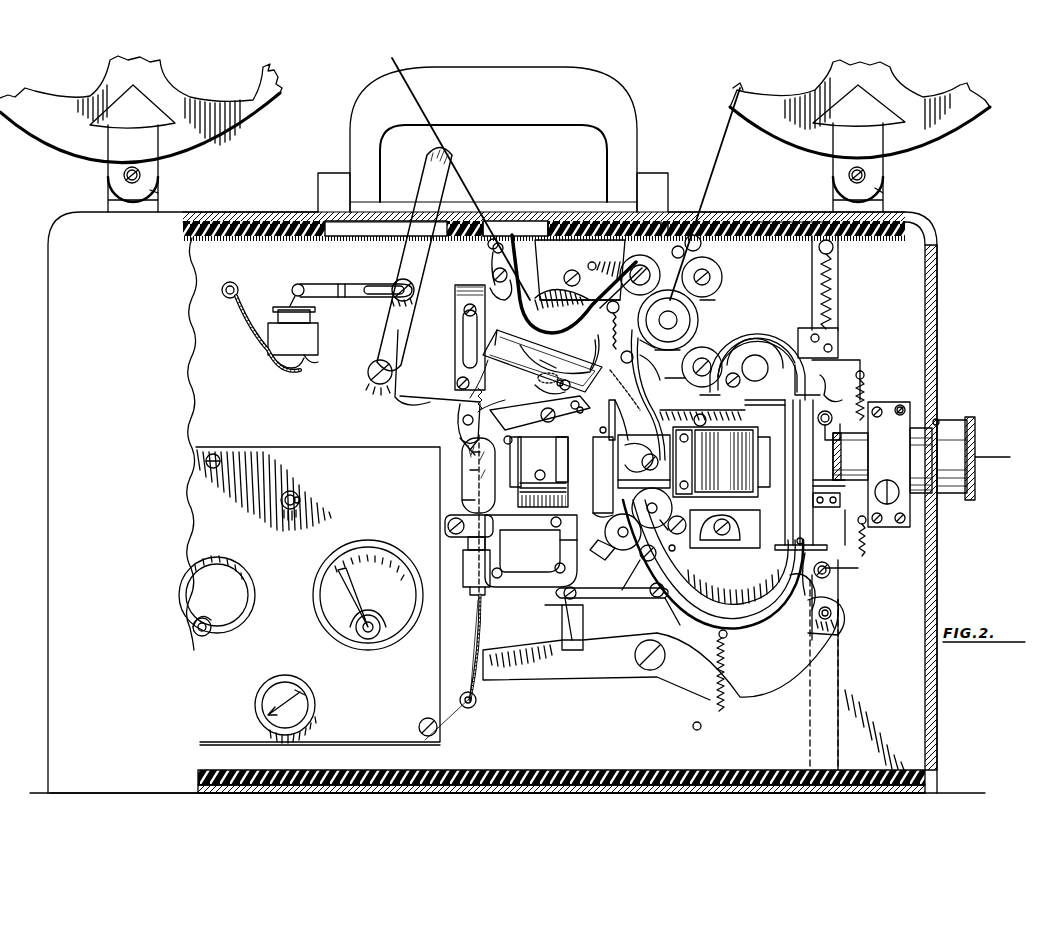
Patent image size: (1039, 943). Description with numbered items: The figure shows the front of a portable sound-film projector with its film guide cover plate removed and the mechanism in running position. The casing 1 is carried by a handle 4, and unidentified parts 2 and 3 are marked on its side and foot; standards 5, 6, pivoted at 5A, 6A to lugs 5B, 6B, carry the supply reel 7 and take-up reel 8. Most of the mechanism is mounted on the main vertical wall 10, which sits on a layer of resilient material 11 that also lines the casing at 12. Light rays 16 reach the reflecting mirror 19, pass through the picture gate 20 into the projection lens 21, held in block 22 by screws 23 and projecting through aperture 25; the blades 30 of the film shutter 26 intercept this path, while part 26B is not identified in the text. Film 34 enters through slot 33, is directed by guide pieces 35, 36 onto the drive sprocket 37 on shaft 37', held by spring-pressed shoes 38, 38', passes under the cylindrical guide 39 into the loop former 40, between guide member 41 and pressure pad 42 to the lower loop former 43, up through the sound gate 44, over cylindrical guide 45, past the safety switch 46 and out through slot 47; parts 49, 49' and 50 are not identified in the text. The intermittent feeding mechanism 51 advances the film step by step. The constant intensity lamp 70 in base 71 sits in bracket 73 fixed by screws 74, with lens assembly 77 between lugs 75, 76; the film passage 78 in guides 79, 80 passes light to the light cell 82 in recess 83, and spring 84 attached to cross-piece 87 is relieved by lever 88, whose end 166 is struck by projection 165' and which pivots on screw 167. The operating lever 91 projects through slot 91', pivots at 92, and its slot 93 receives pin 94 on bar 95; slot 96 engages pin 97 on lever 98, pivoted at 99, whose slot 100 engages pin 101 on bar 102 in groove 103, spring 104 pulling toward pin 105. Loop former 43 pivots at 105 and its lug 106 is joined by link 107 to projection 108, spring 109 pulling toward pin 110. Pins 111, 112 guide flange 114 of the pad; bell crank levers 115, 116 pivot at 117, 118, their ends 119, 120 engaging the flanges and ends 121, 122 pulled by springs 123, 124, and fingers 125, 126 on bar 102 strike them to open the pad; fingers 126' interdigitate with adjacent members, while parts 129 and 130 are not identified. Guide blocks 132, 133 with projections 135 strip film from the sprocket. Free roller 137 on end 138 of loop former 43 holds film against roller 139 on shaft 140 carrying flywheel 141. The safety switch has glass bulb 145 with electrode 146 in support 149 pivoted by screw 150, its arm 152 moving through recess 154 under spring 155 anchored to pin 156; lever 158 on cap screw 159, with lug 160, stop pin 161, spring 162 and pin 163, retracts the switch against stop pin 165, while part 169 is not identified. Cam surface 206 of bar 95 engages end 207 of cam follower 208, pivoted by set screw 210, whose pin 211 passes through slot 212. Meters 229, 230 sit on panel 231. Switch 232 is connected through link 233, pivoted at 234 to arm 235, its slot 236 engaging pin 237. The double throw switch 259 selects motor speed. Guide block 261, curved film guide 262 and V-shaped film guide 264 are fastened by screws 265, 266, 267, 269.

The recorder 1 is at (951, 334).
The front panel 2 is at (110, 449).
The base 3 is at (158, 790).
The handle 4 is at (515, 106).
The foot bracket 5 is at (884, 182).
The screw 5A is at (865, 172).
The bracket arc 5B is at (880, 190).
The foot bracket 6 is at (108, 182).
The screw 6A is at (140, 175).
The bracket arc 6B is at (158, 193).
The foot 7 is at (953, 130).
The foot 8 is at (237, 120).
The compartment 10 is at (888, 322).
The bottom wall 11 is at (720, 793).
The top wall 12 is at (780, 222).
The direction arrow 16 is at (998, 447).
The motor block 19 is at (752, 449).
The motor shaft 20 is at (771, 469).
The knob 21 is at (948, 490).
The bearing plate 22 is at (896, 456).
The screw 23 is at (902, 405).
The shaft bushing 25 is at (940, 420).
The rail 26 is at (800, 484).
The screw 26B is at (728, 385).
The block 30 is at (810, 508).
The post 33 is at (683, 222).
The tape line 34 is at (712, 158).
The guide post 35 is at (702, 244).
The pulley 36 is at (722, 277).
The capstan 37 is at (689, 320).
The capstan hub 37' is at (668, 320).
The roller 38 is at (636, 356).
The roller arm 38' is at (663, 347).
The plate 39 is at (702, 390).
The arch bracket 40 is at (778, 318).
The bracket 41 is at (785, 410).
The rail 42 is at (796, 448).
The arcuate member 43 is at (786, 612).
The plate 44 is at (598, 470).
The pulley 45 is at (634, 262).
The lever 46 is at (551, 388).
The top opening 47 is at (545, 222).
The tape 49 is at (531, 179).
The tape guide 49' is at (714, 418).
The pin 50 is at (592, 262).
The cam 51 is at (741, 550).
The capsule 70 is at (465, 478).
The clamp 71 is at (482, 531).
The bracket 73 is at (530, 580).
The bracket arm 74 is at (563, 562).
The post 75 is at (568, 480).
The post 76 is at (524, 475).
The post 77 is at (565, 443).
The arm 78 is at (640, 390).
The arm 79 is at (622, 402).
The plate 80 is at (720, 434).
The coil 82 is at (632, 444).
The coil base 83 is at (630, 455).
The pin 84 is at (598, 432).
The post 87 is at (614, 408).
The pin 88 is at (572, 405).
The lever 91 is at (414, 259).
The lever slot 91' is at (386, 207).
The pivot screw 92 is at (372, 372).
The plate 93 is at (462, 390).
The tab 94 is at (460, 408).
The tab 95 is at (458, 438).
The cable hook 96 is at (478, 705).
The cable 97 is at (476, 660).
The plate 98 is at (616, 666).
The screw 99 is at (660, 648).
The arm 100 is at (840, 603).
The pin 101 is at (838, 618).
The rod 102 is at (838, 588).
The rod 103 is at (835, 692).
The spring 104 is at (832, 292).
The pin 105 is at (833, 250).
The link 106 is at (660, 598).
The link 107 is at (640, 598).
The link 108 is at (563, 608).
The spring 109 is at (705, 700).
The spring hook 110 is at (700, 730).
The bracket 111 is at (795, 385).
The bar 112 is at (800, 545).
The pin 114 is at (803, 532).
The screw 115 is at (836, 423).
The rod 116 is at (851, 527).
The wheel 117 is at (851, 456).
The screw 118 is at (821, 577).
The lever 119 is at (808, 585).
The link 120 is at (836, 394).
The bar 121 is at (860, 568).
The plate 122 is at (874, 422).
The spring 123 is at (862, 378).
The spring 124 is at (870, 550).
The pin 125 is at (850, 365).
The roller 126 is at (815, 441).
The roller guard 126' is at (750, 352).
The pin 129 is at (810, 602).
The pulley 130 is at (704, 362).
The plate 132 is at (672, 364).
The plate 133 is at (717, 287).
The plate 135 is at (680, 371).
The cam 137 is at (606, 525).
The lever 138 is at (612, 556).
The cam 139 is at (665, 506).
The screw 140 is at (672, 532).
The head 141 is at (555, 373).
The head plate 145 is at (535, 352).
The head 146 is at (548, 392).
The plate 149 is at (570, 372).
The plate 150 is at (556, 360).
The tape loop 152 is at (572, 325).
The spool 154 is at (570, 306).
The roller 155 is at (610, 330).
The belt 156 is at (606, 300).
The spring 158 is at (495, 392).
The pin 159 is at (462, 422).
The contact 160 is at (484, 461).
The contact 161 is at (487, 445).
The link 162 is at (498, 403).
The screw 163 is at (460, 360).
The pin 165 is at (552, 390).
The pin 165' is at (447, 502).
The pin 166 is at (495, 450).
The lever 167 is at (540, 415).
The pin 169 is at (508, 338).
The slotted plate 206 is at (470, 322).
The screw 207 is at (492, 292).
The link 208 is at (493, 265).
The plate 210 is at (563, 271).
The gap 211 is at (510, 242).
The pin 212 is at (485, 240).
The meter 229 is at (230, 542).
The meter 230 is at (392, 523).
The panel 231 is at (378, 679).
The microphone jack 232 is at (305, 346).
The arm 233 is at (358, 282).
The pivot 234 is at (304, 277).
The link 235 is at (290, 308).
The screw 236 is at (392, 282).
The slot 237 is at (400, 302).
The switch 259 is at (298, 496).
The plate 261 is at (724, 406).
The arcuate guide 262 is at (740, 580).
The screw 264 is at (510, 318).
The screw 265 is at (568, 282).
The pin 266 is at (674, 250).
The link 267 is at (655, 372).
The plate 269 is at (563, 257).